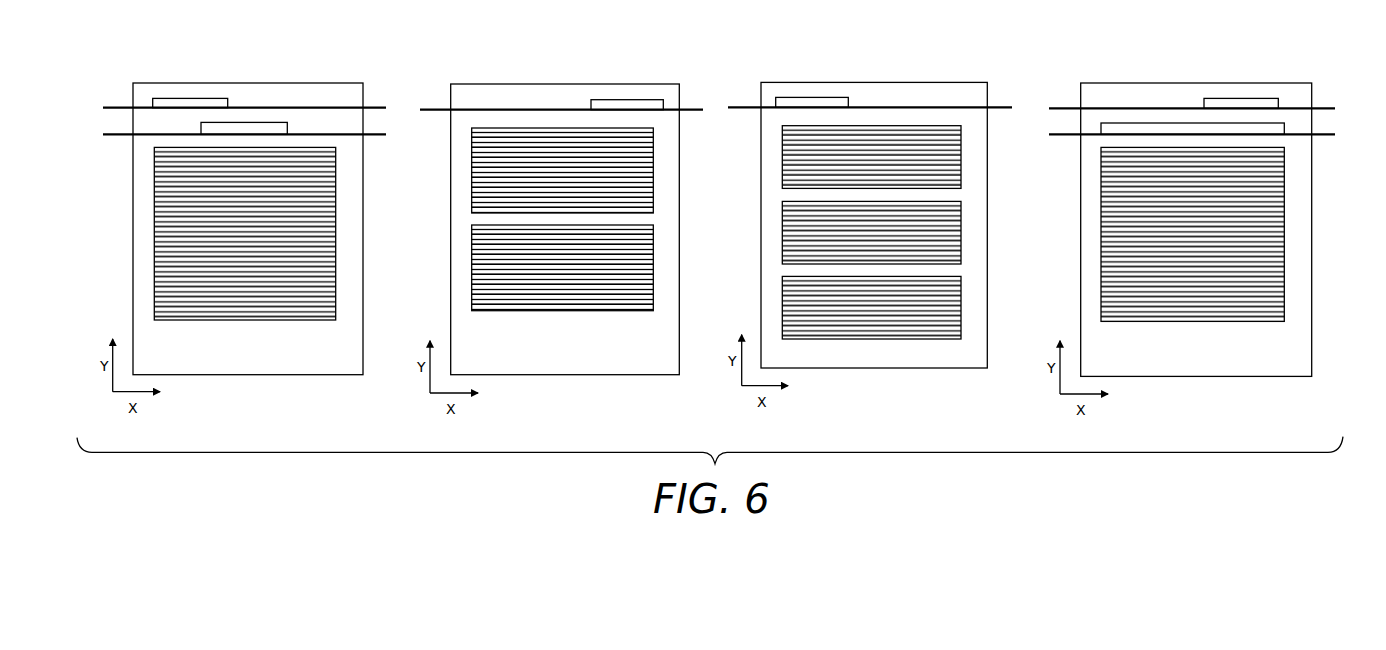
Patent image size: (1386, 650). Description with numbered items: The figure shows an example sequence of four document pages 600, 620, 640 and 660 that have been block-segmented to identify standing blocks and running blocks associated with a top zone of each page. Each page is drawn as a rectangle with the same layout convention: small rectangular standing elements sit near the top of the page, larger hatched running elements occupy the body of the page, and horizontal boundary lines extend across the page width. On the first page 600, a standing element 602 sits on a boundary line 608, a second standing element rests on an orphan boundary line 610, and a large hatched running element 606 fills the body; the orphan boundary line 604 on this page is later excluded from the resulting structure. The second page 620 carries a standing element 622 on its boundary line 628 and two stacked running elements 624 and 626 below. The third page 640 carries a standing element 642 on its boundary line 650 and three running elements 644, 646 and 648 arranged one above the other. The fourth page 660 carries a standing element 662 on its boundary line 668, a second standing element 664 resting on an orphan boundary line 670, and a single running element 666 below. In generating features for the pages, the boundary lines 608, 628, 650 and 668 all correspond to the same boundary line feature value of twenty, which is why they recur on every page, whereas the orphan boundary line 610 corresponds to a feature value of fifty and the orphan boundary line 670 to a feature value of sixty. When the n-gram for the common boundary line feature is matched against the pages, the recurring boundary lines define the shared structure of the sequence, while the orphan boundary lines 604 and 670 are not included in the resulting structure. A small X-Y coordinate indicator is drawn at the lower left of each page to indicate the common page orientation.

The page 600 is at (285, 82).
The standing element 602 is at (196, 98).
The orphan boundary line 604 is at (287, 127).
The running element 606 is at (336, 210).
The boundary line 608 is at (372, 107).
The orphan boundary line 610 is at (123, 135).
The page 620 is at (488, 83).
The standing element 622 is at (632, 99).
The running element 624 is at (655, 193).
The running element 626 is at (655, 258).
The boundary line 628 is at (690, 109).
The page 640 is at (938, 82).
The standing element 642 is at (818, 97).
The running element 644 is at (962, 165).
The running element 646 is at (962, 243).
The running element 648 is at (962, 315).
The boundary line 650 is at (997, 107).
The page 660 is at (1140, 82).
The standing element 662 is at (1247, 98).
The standing element 664 is at (1286, 127).
The running element 666 is at (1284, 212).
The boundary line 668 is at (1320, 108).
The orphan boundary line 670 is at (1072, 135).